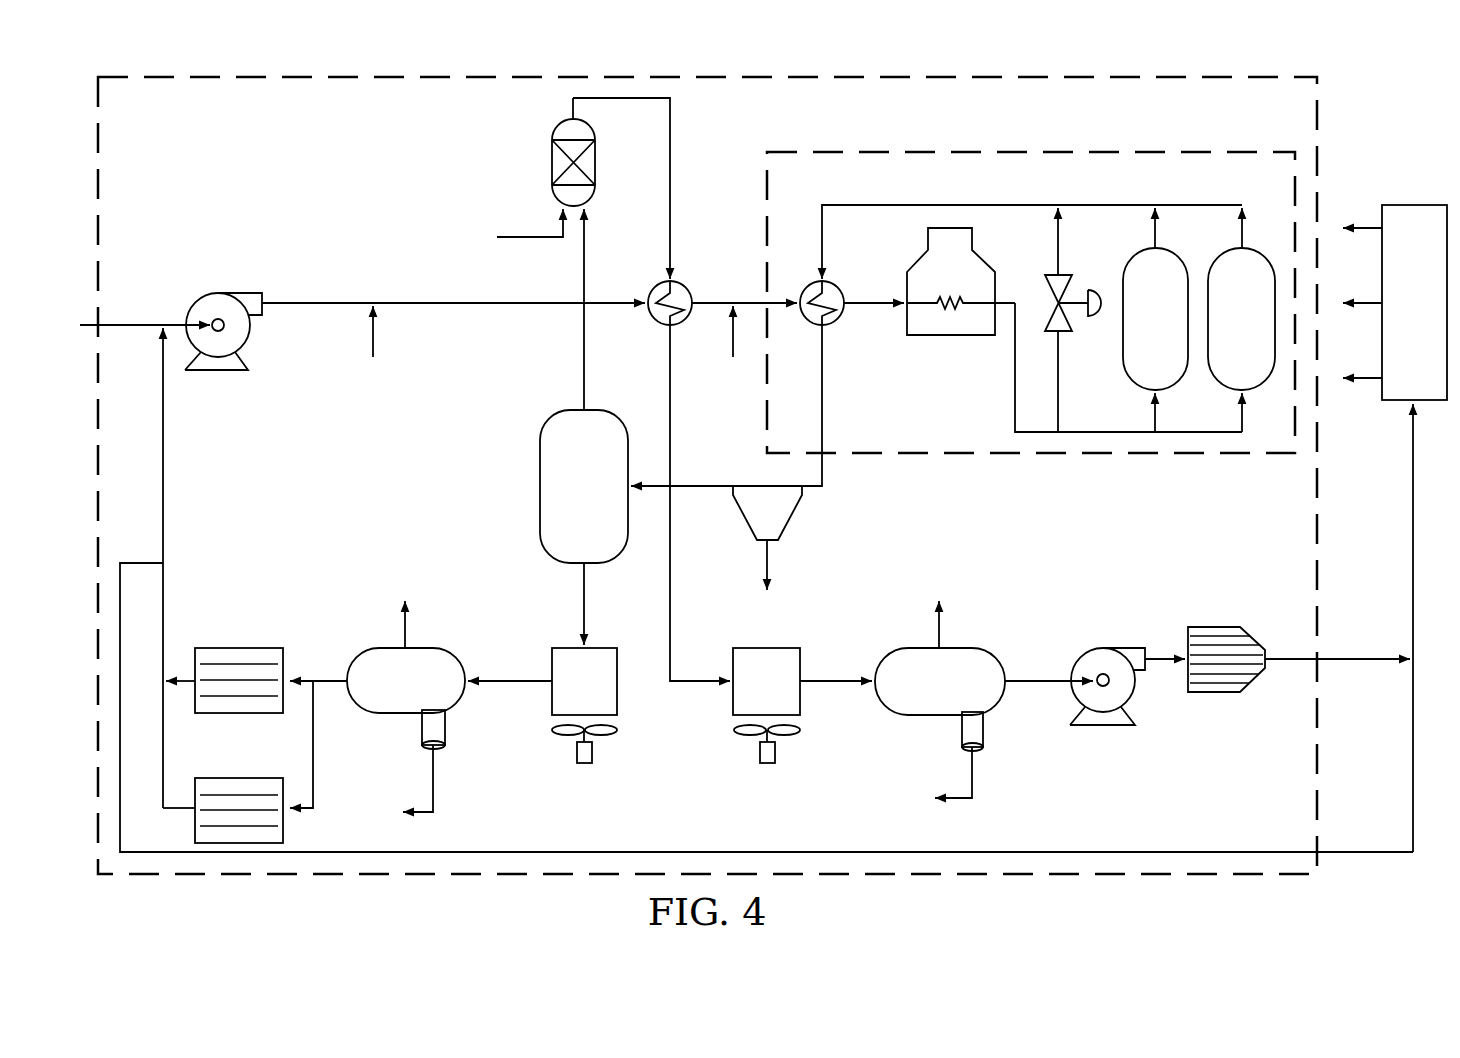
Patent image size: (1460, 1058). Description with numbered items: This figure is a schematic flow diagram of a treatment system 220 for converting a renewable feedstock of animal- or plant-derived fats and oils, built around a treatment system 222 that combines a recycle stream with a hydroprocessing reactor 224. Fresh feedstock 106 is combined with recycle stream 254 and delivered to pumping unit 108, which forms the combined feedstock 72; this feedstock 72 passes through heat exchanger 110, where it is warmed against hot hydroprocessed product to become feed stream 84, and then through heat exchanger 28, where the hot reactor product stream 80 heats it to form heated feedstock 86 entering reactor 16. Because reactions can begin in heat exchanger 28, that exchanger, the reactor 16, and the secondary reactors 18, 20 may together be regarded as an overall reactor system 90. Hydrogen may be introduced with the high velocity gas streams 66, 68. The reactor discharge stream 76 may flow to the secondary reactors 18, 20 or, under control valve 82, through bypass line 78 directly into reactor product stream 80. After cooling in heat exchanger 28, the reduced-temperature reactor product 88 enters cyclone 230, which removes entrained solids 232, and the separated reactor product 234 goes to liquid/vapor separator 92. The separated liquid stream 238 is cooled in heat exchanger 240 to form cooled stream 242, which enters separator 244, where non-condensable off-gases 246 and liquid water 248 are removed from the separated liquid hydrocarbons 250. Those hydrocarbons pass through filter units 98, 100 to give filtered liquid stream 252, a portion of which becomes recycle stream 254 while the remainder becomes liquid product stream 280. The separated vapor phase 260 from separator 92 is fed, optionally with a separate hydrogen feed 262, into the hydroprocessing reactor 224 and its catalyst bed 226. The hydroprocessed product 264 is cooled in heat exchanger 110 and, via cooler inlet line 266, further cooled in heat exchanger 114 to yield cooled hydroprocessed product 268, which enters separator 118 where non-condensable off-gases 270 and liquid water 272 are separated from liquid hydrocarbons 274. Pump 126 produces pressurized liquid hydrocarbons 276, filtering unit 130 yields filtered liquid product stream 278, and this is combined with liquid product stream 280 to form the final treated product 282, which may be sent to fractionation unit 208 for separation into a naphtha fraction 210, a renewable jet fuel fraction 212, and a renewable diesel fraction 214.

The reactor 16 is at (907, 314).
The secondary reactor 18 is at (1141, 334).
The secondary reactor 20 is at (1228, 334).
The heat exchanger 28 is at (812, 281).
The high velocity gas stream 66 is at (371, 334).
The high velocity gas stream 68 is at (731, 335).
The feedstock 72 is at (292, 302).
The reactor discharge stream 76 is at (1015, 368).
The bypass line 78 is at (1060, 368).
The reactor product stream 80 is at (1027, 207).
The control valve 82 is at (1072, 292).
The feed stream 84 is at (725, 301).
The heated feedstock 86 is at (876, 301).
The reduced-temperature reactor product 88 is at (823, 399).
The overall reactor system 90 is at (1130, 460).
The liquid/vapor separator 92 is at (570, 501).
The filter unit 98 is at (261, 716).
The filter unit 100 is at (218, 777).
The fresh feedstock 106 is at (143, 322).
The pumping unit 108 is at (220, 293).
The heat exchanger 110 is at (657, 284).
The heat exchanger 114 is at (748, 695).
The separator 118 is at (921, 695).
The pump 126 is at (1100, 728).
The filtering unit 130 is at (1222, 695).
The fractionation unit 208 is at (1425, 205).
The naphtha fraction 210 is at (1367, 227).
The renewable jet fuel fraction 212 is at (1367, 302).
The renewable diesel fraction 214 is at (1367, 377).
The treatment system 220 is at (1375, 95).
The treatment system 222 is at (370, 73).
The hydroprocessing reactor 224 is at (551, 163).
The catalyst bed 226 is at (594, 163).
The cyclone 230 is at (793, 518).
The entrained solids 232 is at (769, 564).
The separated reactor product 234 is at (690, 484).
The separated liquid stream 238 is at (582, 596).
The heat exchanger 240 is at (565, 695).
The cooled stream 242 is at (520, 686).
The separator 244 is at (400, 716).
The non-condensable off-gases 246 is at (410, 633).
The liquid water 248 is at (437, 779).
The separated liquid hydrocarbons 250 is at (340, 678).
The filtered liquid stream 252 is at (165, 590).
The recycle stream 254 is at (165, 438).
The separated vapor phase 260 is at (582, 346).
The hydrogen feed 262 is at (530, 241).
The hydroprocessed product 264 is at (672, 206).
The cooler inlet line 266 is at (707, 686).
The cooled hydroprocessed product 268 is at (843, 686).
The non-condensable off-gases 270 is at (946, 633).
The liquid water 272 is at (973, 773).
The liquid hydrocarbons 274 is at (1048, 685).
The pressurized liquid hydrocarbons 276 is at (1153, 664).
The filtered liquid product stream 278 is at (1293, 653).
The liquid product stream 280 is at (145, 562).
The final treated product 282 is at (1410, 522).